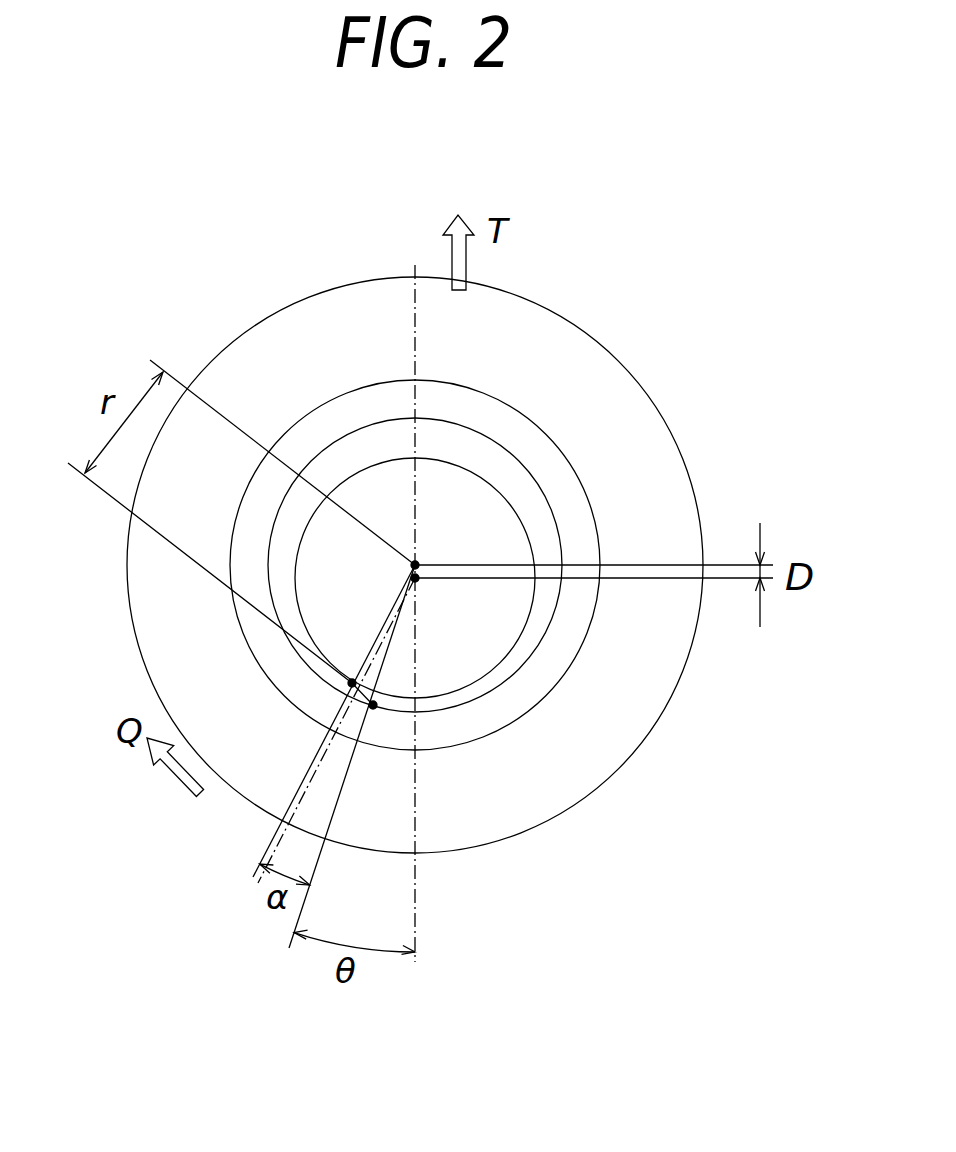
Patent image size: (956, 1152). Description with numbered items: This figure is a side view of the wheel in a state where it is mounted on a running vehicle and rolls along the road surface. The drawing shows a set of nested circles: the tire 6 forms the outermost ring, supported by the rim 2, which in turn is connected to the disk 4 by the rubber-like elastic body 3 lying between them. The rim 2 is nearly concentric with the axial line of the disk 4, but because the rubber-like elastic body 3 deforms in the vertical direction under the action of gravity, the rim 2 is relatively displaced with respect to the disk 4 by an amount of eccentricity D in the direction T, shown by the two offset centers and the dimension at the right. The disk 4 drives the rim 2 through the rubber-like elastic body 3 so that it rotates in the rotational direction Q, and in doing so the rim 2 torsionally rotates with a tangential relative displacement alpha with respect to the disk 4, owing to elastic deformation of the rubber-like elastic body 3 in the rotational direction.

The tire 6 is at (497, 330).
The rim 2 is at (490, 415).
The rubber-like elastic body 3 is at (513, 477).
The disk 4 is at (462, 670).